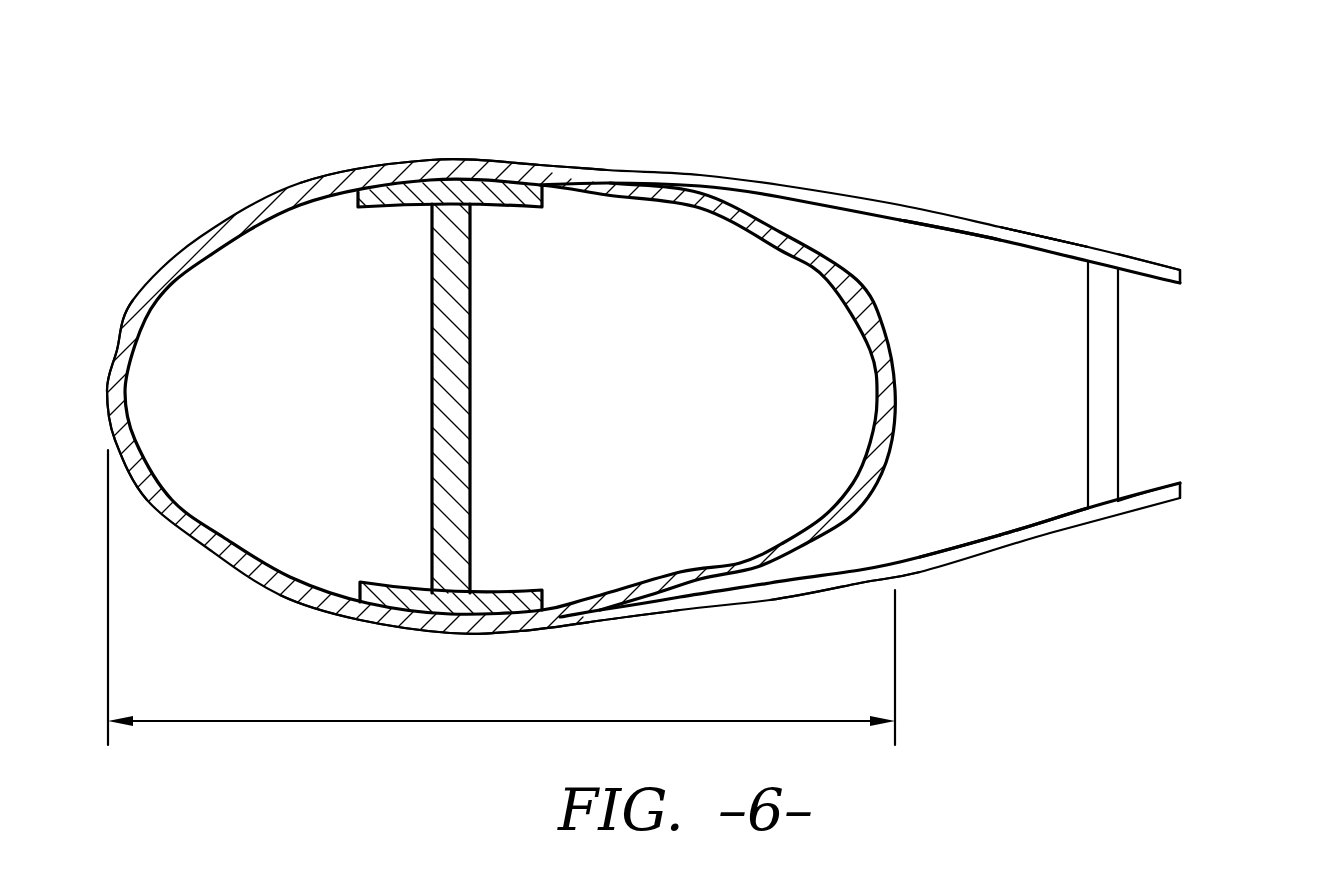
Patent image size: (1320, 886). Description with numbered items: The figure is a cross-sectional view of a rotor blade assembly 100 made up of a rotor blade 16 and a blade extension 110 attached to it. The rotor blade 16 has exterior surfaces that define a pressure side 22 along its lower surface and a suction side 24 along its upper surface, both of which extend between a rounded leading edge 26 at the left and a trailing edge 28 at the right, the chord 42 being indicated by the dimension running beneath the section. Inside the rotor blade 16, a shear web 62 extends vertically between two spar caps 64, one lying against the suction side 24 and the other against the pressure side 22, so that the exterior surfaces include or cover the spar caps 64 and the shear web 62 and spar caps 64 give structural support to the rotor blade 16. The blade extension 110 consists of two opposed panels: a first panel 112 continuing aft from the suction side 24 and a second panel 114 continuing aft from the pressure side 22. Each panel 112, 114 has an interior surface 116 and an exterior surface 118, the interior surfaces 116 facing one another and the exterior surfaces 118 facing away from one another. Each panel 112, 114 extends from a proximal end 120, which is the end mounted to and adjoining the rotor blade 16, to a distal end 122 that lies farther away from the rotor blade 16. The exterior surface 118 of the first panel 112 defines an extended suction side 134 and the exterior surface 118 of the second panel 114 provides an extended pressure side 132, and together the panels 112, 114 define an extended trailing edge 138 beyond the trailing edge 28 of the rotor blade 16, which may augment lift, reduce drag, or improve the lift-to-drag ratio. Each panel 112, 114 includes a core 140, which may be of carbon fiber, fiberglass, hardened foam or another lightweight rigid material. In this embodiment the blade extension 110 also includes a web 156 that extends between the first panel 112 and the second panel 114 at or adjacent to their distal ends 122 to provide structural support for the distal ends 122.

The rotor blade assembly 100 is at (222, 107).
The rotor blade 16 is at (176, 200).
The pressure side 22 is at (447, 640).
The suction side 24 is at (448, 160).
The leading edge 26 is at (105, 397).
The trailing edge 28 is at (897, 382).
The chord 42 is at (418, 722).
The shear web 62 is at (457, 418).
The spar caps 64 is at (507, 200).
The blade extension 110 is at (899, 156).
The first panel 112 is at (821, 166).
The second panel 114 is at (994, 582).
The interior surface 116 is at (972, 237).
The exterior surface 118 is at (1017, 223).
The proximal end 120 is at (554, 146).
The distal end 122 is at (1192, 259).
The extended pressure side 132 is at (1075, 545).
The extended suction side 134 is at (1084, 209).
The extended trailing edge 138 is at (1206, 352).
The core 140 is at (1112, 262).
The web 156 is at (1108, 380).